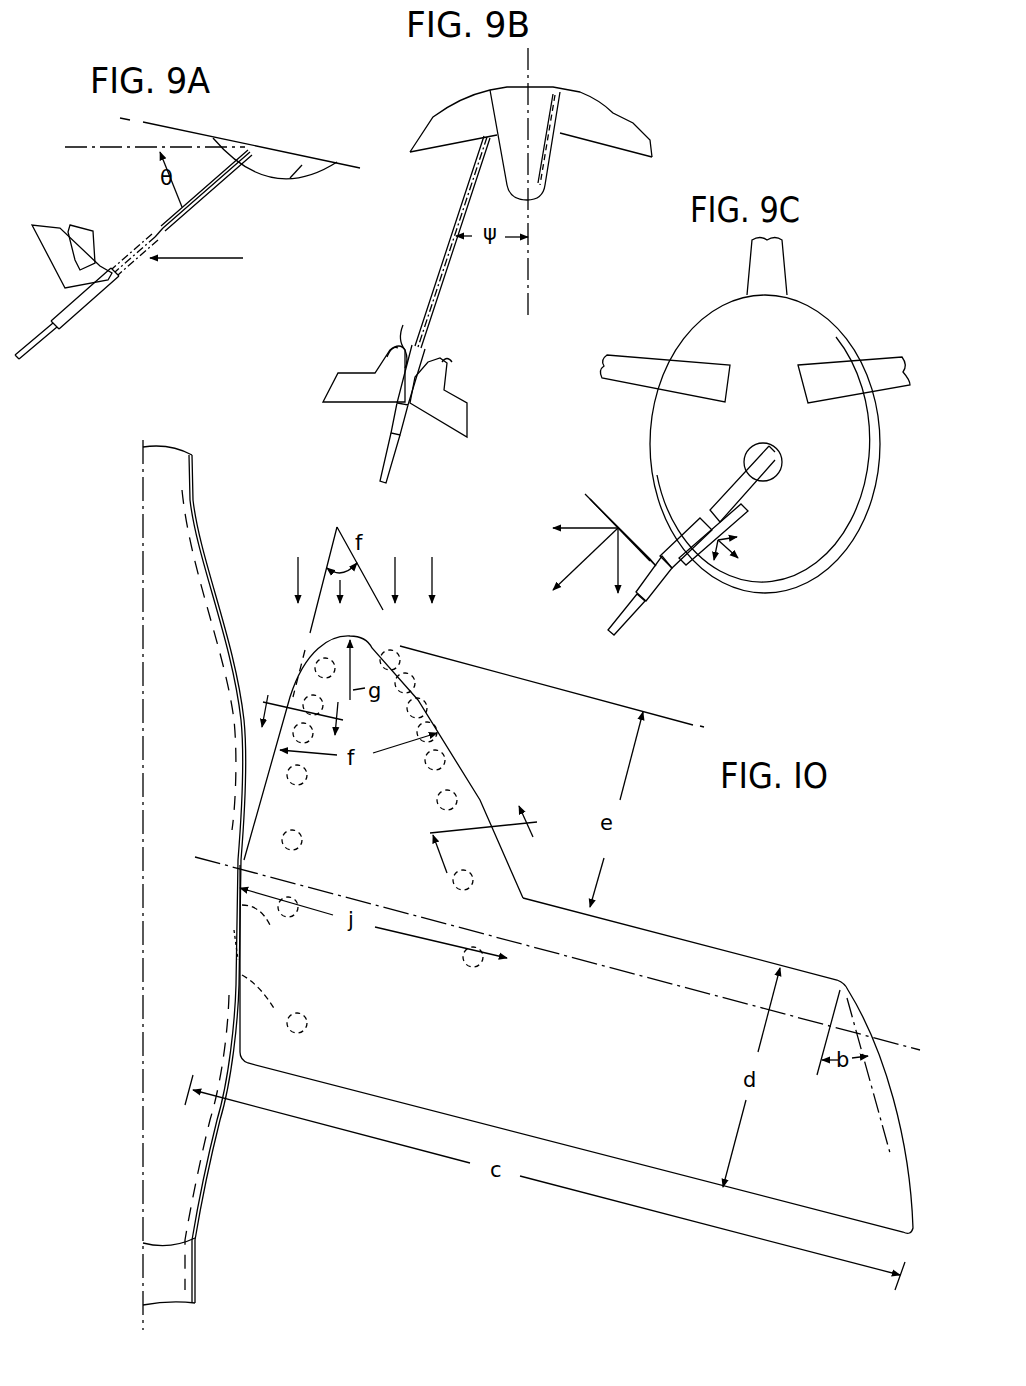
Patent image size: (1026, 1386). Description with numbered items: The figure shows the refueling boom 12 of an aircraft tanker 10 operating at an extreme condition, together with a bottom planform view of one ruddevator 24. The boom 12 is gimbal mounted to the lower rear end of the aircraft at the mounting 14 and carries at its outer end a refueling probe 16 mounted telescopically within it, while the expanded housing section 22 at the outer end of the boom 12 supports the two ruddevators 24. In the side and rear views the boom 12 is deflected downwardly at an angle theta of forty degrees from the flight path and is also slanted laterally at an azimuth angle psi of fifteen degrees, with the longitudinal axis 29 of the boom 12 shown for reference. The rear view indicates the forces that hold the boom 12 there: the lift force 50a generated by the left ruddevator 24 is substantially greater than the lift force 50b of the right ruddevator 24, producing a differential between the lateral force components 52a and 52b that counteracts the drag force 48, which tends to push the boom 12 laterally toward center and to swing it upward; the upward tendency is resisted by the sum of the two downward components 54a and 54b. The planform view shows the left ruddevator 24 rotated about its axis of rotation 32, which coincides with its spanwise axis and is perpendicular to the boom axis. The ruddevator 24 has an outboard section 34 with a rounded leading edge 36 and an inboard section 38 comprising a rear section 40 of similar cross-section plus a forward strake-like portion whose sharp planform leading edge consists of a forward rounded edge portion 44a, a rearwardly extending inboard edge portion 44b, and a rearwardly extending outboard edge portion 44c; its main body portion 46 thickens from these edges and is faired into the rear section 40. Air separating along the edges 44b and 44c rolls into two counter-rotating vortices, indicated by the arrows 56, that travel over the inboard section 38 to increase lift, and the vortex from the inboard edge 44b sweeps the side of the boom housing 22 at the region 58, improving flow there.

In FIG. 9B, the aircraft tanker 10 is at (578, 70).
In FIG. 9C, the aircraft tanker 10 is at (835, 293).
In FIG. 9A, the boom 12 is at (227, 187).
In FIG. 9B, the boom 12 is at (440, 313).
In FIG. 9C, the boom 12 is at (733, 483).
In FIG. 10, the boom 12 is at (183, 468).
In FIG. 9A, the gimbal mounting 14 is at (302, 168).
In FIG. 9B, the gimbal mounting 14 is at (525, 145).
In FIG. 9C, the gimbal mounting 14 is at (780, 464).
In FIG. 10, the gimbal mounting 14 is at (392, 776).
In FIG. 9A, the refueling probe 16 is at (38, 347).
In FIG. 9B, the refueling probe 16 is at (386, 458).
In FIG. 9C, the refueling probe 16 is at (622, 627).
In FIG. 9A, the expanded housing section 22 is at (100, 300).
In FIG. 9B, the expanded housing section 22 is at (405, 412).
In FIG. 9C, the expanded housing section 22 is at (673, 573).
In FIG. 10, the expanded housing section 22 is at (205, 640).
In FIG. 9A, the ruddevator 24 is at (58, 226).
In FIG. 9B, the ruddevator 24 is at (345, 402).
In FIG. 9C, the ruddevator 24 is at (607, 503).
In FIG. 10, the ruddevator 24 is at (640, 887).
In FIG. 9A, the longitudinal axis of the boom 29 is at (138, 247).
In FIG. 9B, the longitudinal axis of the boom 29 is at (442, 244).
In FIG. 10, the longitudinal axis of the boom 29 is at (195, 1237).
In FIG. 10, the axis of rotation 32 is at (663, 983).
In FIG. 10, the outboard section 34 is at (722, 965).
In FIG. 10, the leading edge of the outboard section 36 is at (662, 933).
In FIG. 10, the inboard section 38 is at (405, 1173).
In FIG. 10, the rear section 40 is at (267, 1045).
In FIG. 10, the forward rounded edge portion 44a is at (357, 637).
In FIG. 9B, the inboard edge portion 44b is at (403, 350).
In FIG. 10, the inboard edge portion 44b is at (290, 697).
In FIG. 9B, the outboard edge portion 44c is at (387, 358).
In FIG. 10, the outboard edge portion 44c is at (457, 766).
In FIG. 10, the main body portion 46 is at (400, 876).
In FIG. 9A, the drag force 48 is at (210, 260).
In FIG. 9C, the lift force of left ruddevator 50a is at (582, 560).
In FIG. 9C, the lift force of right ruddevator 50b is at (743, 547).
In FIG. 9C, the lateral force component 52a is at (575, 523).
In FIG. 9C, the lateral force component 52b is at (730, 538).
In FIG. 9C, the downward force component 54a is at (610, 572).
In FIG. 9C, the downward force component 54b is at (717, 552).
In FIG. 10, the vortex flow arrows 56 is at (445, 765).
In FIG. 10, the vortex sweep region 58 is at (248, 945).